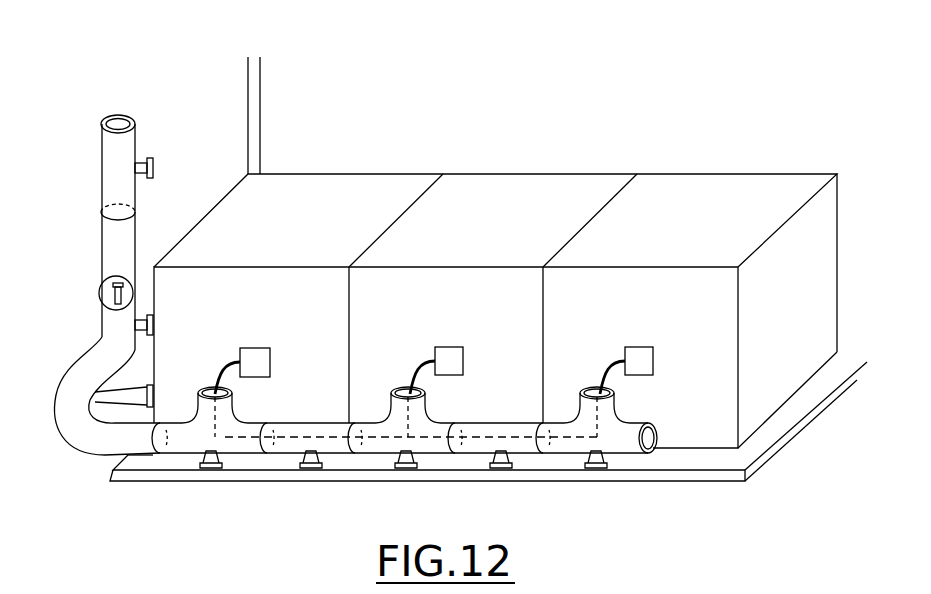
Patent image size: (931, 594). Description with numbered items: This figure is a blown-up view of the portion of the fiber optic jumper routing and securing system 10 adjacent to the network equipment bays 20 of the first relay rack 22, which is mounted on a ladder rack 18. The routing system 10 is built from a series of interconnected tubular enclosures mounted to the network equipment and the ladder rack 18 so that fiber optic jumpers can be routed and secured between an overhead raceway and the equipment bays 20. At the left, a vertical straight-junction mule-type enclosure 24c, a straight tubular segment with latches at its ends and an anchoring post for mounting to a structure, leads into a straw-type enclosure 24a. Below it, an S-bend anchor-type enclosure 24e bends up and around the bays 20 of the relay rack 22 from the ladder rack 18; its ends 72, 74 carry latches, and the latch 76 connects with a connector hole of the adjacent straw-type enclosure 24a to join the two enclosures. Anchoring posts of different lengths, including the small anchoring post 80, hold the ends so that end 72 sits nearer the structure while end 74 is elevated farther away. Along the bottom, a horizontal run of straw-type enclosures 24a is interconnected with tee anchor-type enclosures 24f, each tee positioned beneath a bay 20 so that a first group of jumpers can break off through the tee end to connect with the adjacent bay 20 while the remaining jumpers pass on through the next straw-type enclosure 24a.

The fiber optic jumper routing and securing system 10 is at (90, 277).
The ladder rack 18 is at (253, 94).
The network equipment bays 20 is at (437, 351).
The relay rack 22 is at (800, 243).
The straw-type enclosure 24a is at (99, 239).
The straight-junction mule-type enclosure 24c is at (99, 165).
The S-bend anchor-type enclosure 24e is at (57, 432).
The tee anchor-type enclosure 24f is at (434, 459).
The end 72 is at (104, 279).
The end 74 is at (149, 455).
The latch 76 is at (125, 287).
The anchoring post 80 is at (398, 459).